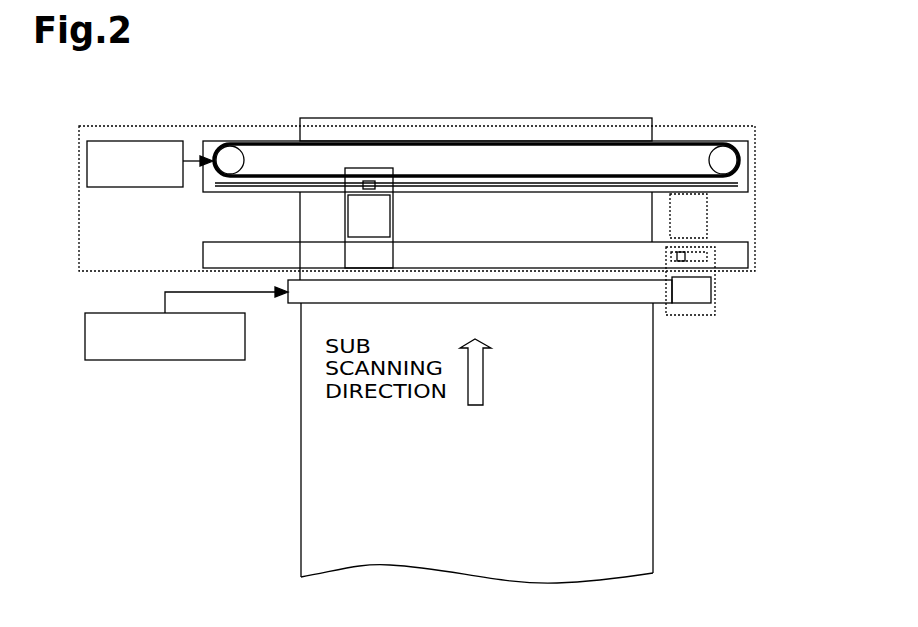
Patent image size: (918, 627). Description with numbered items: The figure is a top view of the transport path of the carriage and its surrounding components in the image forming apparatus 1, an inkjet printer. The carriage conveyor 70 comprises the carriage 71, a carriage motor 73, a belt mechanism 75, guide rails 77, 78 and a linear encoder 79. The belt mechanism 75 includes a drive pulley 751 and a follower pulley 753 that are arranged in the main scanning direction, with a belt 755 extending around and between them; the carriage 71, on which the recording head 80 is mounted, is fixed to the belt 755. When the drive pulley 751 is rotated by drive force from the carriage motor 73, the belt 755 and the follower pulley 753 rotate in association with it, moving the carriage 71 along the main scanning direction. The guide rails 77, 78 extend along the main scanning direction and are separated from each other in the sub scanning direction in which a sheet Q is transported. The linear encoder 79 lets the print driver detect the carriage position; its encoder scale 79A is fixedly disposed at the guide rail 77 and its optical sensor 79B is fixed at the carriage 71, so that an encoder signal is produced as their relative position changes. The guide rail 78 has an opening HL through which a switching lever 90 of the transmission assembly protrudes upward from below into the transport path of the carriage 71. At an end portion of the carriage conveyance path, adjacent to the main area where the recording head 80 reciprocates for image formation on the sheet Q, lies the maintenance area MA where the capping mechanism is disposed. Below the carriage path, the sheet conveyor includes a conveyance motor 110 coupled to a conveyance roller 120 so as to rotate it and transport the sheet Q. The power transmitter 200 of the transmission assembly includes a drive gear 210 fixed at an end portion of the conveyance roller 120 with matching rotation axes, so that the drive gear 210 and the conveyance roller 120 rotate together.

The image forming apparatus 1 is at (503, 102).
The carriage conveyor 70 is at (695, 125).
The carriage 71 is at (395, 217).
The carriage motor 73 is at (132, 140).
The belt mechanism 75 is at (289, 142).
The drive pulley 751 is at (228, 160).
The follower pulley 753 is at (730, 162).
The belt 755 is at (255, 143).
The guide rail 77 is at (750, 143).
The guide rail 78 is at (750, 256).
The linear encoder 79 is at (420, 227).
The encoder scale 79A is at (220, 186).
The optical sensor 79B is at (224, 189).
The recording head 80 is at (353, 223).
The switching lever 90 is at (682, 259).
The conveyance motor 110 is at (162, 362).
The conveyance roller 120 is at (287, 304).
The power transmitter 200 is at (693, 316).
The drive gear 210 is at (702, 290).
The sheet Q is at (588, 117).
The maintenance area MA is at (707, 207).
The opening HL is at (707, 255).